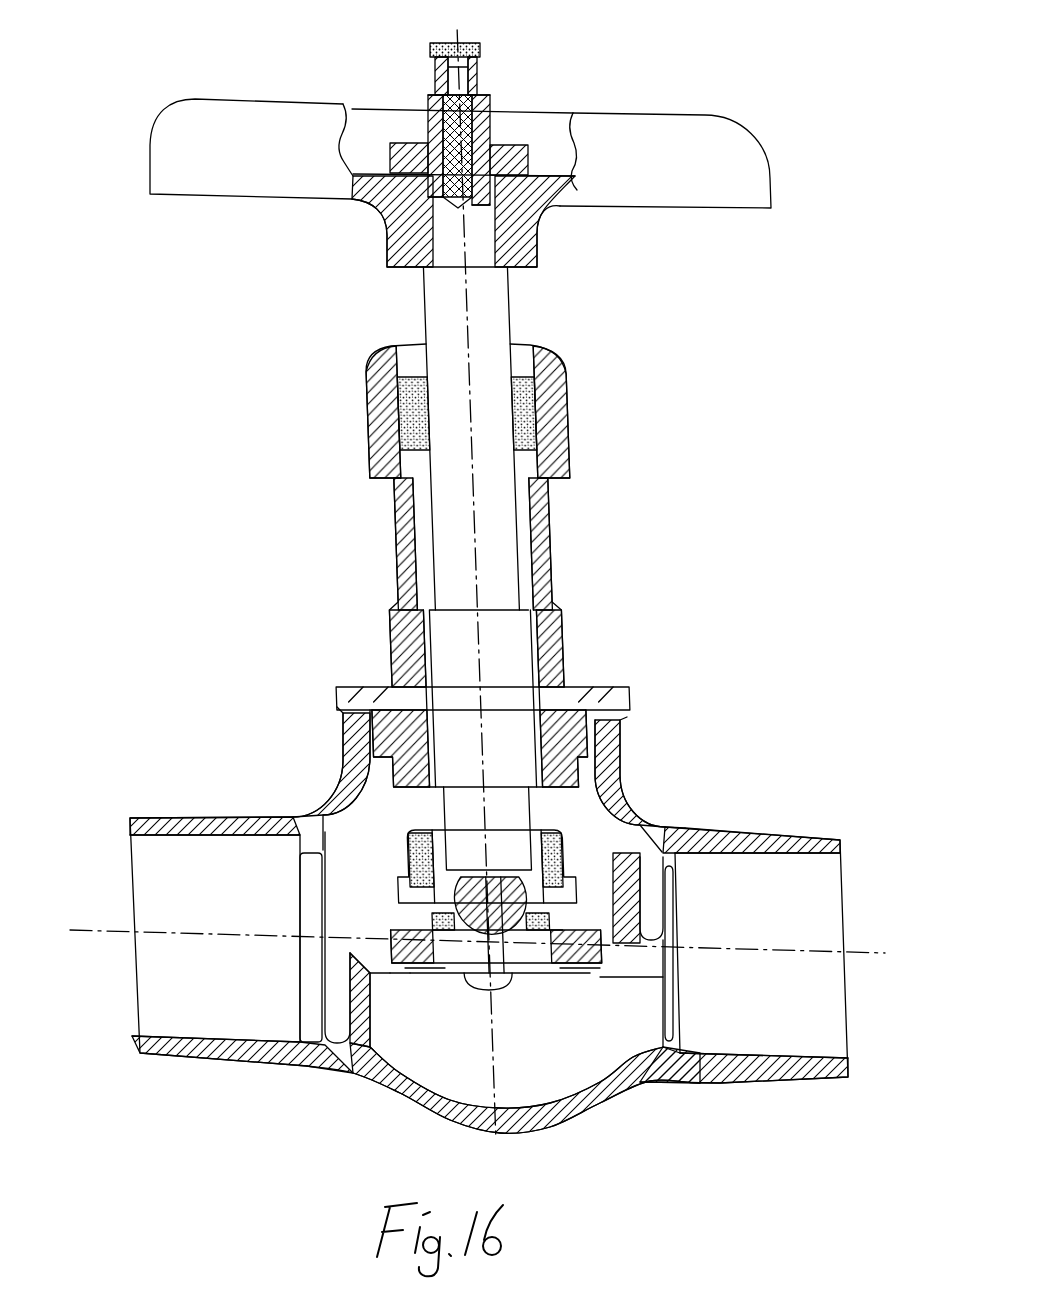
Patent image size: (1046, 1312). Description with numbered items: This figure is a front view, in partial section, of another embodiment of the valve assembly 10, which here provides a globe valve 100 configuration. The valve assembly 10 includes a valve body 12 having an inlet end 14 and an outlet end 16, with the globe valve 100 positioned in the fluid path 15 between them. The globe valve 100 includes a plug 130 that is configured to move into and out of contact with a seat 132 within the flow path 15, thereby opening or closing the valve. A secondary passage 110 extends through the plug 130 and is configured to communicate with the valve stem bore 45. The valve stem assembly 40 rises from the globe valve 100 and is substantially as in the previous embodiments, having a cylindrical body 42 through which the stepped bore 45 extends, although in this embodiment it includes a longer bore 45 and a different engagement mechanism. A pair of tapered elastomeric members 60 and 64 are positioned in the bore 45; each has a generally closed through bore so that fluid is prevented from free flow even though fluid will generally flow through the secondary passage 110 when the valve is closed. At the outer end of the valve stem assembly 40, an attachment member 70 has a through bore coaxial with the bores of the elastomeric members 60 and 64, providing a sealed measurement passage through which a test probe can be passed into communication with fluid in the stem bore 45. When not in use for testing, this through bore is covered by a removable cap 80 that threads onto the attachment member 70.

The valve assembly 10 is at (613, 308).
The valve body 12 is at (706, 1069).
The inlet end 14 is at (821, 899).
The fluid path 15 is at (470, 1043).
The outlet end 16 is at (150, 890).
The valve stem assembly 40 is at (516, 156).
The cylindrical body 42 is at (489, 94).
The stepped bore 45 is at (395, 236).
The elastomeric member 60 is at (485, 133).
The elastomeric member 64 is at (443, 112).
The attachment member 70 is at (469, 58).
The removable cap 80 is at (445, 56).
The globe valve 100 is at (445, 577).
The secondary passage 110 is at (496, 939).
The plug 130 is at (428, 972).
The seat 132 is at (590, 972).